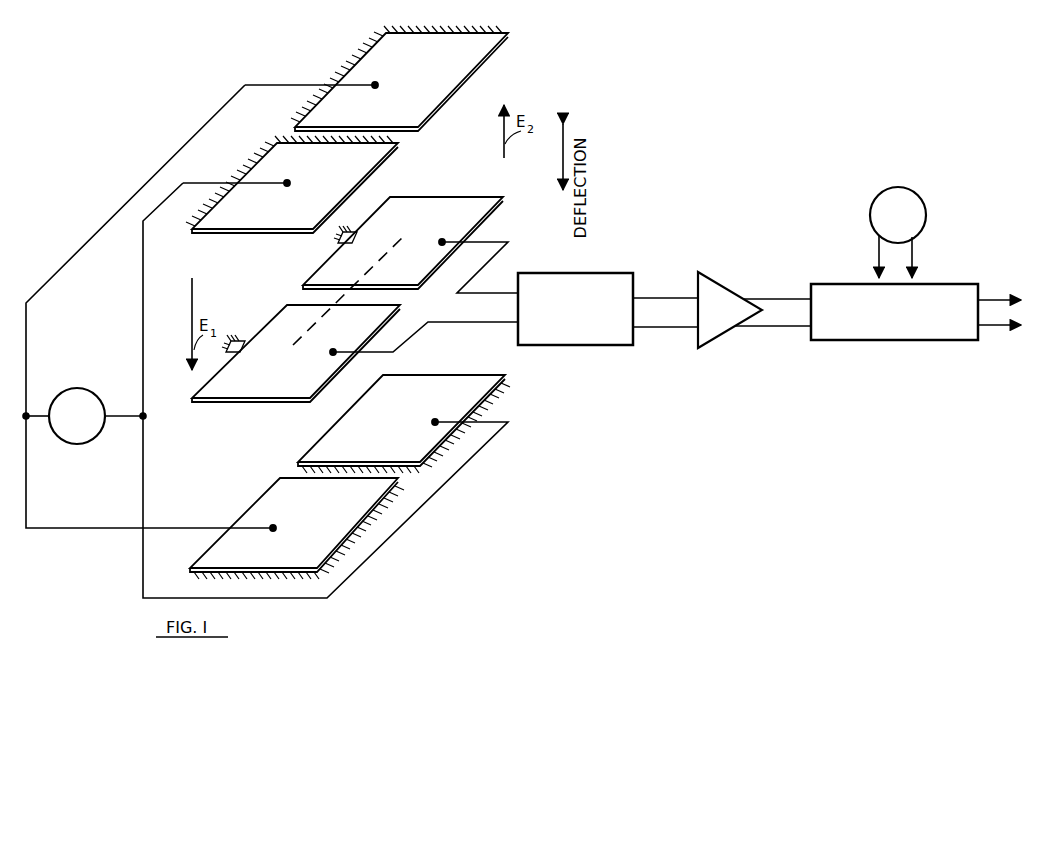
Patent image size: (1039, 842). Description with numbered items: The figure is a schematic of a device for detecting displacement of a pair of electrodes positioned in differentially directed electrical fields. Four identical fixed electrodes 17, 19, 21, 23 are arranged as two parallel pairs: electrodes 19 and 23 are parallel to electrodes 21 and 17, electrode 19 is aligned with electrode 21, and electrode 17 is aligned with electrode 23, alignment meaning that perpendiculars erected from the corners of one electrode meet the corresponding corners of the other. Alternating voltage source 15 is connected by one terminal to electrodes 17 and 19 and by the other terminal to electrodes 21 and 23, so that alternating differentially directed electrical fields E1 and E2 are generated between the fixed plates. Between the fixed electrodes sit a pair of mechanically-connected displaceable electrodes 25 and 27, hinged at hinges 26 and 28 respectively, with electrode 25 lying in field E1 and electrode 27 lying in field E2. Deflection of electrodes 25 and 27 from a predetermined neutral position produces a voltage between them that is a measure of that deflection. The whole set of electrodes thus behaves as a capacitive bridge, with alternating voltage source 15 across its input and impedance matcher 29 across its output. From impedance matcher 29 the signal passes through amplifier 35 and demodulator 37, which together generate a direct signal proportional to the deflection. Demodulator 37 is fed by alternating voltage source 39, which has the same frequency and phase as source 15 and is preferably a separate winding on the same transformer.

The alternating voltage source 15 is at (73, 430).
The fixed electrode 17 is at (500, 42).
The fixed electrode 19 is at (280, 505).
The fixed electrode 21 is at (252, 209).
The fixed electrode 23 is at (453, 399).
The displaceable electrode 25 is at (265, 389).
The hinge 26 is at (237, 342).
The displaceable electrode 27 is at (423, 222).
The hinge 28 is at (351, 233).
The impedance matcher 29 is at (540, 327).
The amplifier 35 is at (720, 312).
The demodulator 37 is at (908, 322).
The alternating voltage source 39 is at (886, 202).